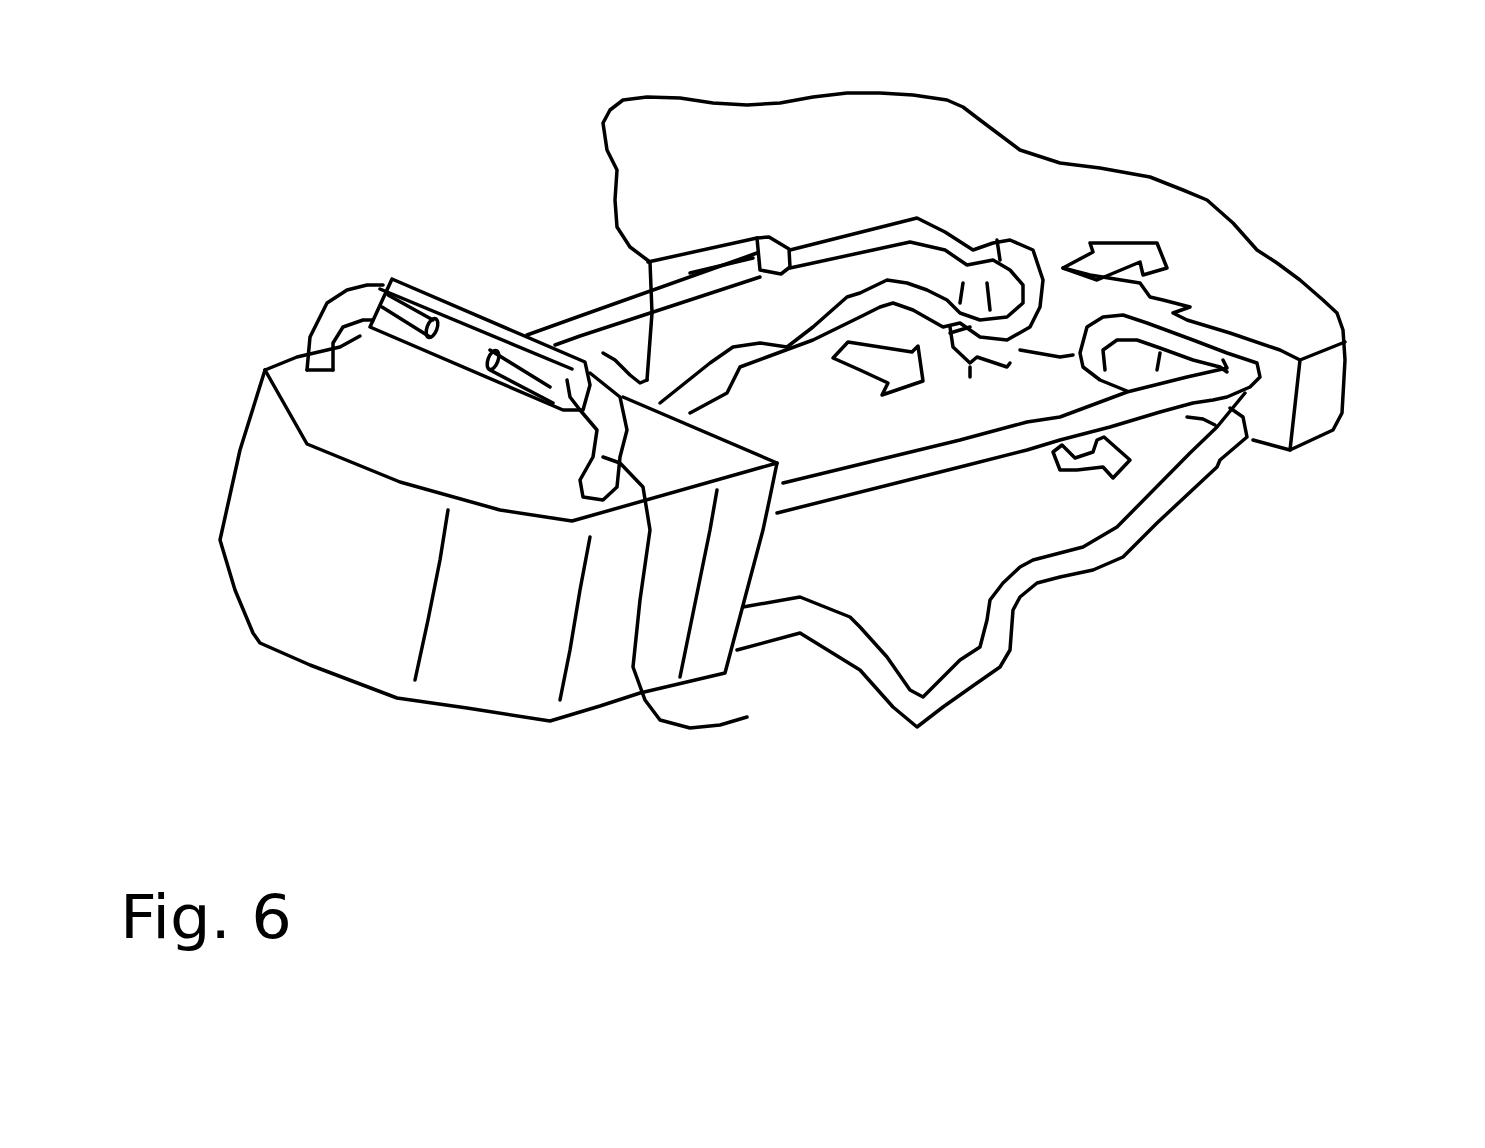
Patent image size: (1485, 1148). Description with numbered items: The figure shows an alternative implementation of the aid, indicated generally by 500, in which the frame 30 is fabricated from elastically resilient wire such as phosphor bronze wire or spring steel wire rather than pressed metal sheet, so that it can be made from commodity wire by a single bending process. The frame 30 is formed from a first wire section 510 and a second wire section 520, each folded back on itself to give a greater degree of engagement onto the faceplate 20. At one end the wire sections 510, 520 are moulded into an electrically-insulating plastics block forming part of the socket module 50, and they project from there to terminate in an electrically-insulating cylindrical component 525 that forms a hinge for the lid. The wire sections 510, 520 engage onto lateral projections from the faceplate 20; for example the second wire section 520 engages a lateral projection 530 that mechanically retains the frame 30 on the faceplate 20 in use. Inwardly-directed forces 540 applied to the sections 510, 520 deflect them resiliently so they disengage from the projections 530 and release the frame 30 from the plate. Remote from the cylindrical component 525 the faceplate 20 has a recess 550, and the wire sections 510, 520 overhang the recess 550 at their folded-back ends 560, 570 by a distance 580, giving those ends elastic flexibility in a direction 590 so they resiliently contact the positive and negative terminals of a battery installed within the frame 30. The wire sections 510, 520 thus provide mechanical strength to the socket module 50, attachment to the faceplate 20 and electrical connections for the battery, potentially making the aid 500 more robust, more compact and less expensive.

The faceplate 20 is at (712, 199).
The frame 30 is at (323, 317).
The socket module 50 is at (310, 598).
The aid 500 is at (1345, 685).
The first wire section 510 is at (973, 667).
The second wire section 520 is at (637, 303).
The electrically-insulating cylindrical component 525 is at (473, 317).
The lateral projection 530 is at (797, 237).
The inwardly-directed forces 540 is at (1090, 470).
The recess 550 is at (1173, 297).
The folded-back end 560 is at (1120, 380).
The folded-back end 570 is at (1023, 247).
The distance 580 is at (1060, 383).
The direction 590 is at (1143, 257).